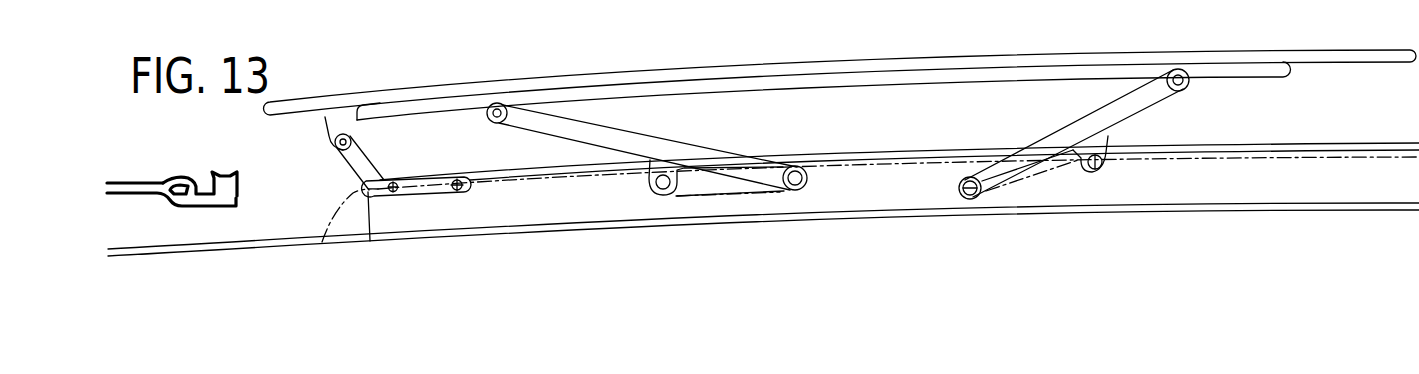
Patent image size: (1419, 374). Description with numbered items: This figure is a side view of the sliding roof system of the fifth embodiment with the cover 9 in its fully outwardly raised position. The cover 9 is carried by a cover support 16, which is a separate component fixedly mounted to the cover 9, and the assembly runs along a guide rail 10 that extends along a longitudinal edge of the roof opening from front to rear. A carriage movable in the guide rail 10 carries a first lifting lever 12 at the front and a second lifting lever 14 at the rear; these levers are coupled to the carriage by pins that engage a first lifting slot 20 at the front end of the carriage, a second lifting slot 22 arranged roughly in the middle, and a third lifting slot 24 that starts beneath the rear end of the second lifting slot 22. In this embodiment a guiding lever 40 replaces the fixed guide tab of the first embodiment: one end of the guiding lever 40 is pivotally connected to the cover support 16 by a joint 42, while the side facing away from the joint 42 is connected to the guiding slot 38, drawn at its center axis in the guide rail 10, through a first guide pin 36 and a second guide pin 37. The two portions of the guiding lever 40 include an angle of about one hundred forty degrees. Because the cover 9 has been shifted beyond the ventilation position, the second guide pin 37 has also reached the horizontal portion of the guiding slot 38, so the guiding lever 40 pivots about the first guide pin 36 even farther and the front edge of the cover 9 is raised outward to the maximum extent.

The cover 9 is at (755, 65).
The guide rail 10 is at (1262, 185).
The first lifting lever 12 is at (678, 147).
The second lifting lever 14 is at (1167, 100).
The cover support 16 is at (463, 102).
The first lifting slot 20 is at (730, 196).
The second lifting slot 22 is at (867, 178).
The third lifting slot 24 is at (1150, 168).
The first guide pin 36 is at (458, 190).
The second guide pin 37 is at (394, 192).
The guiding slot 38 is at (330, 248).
The guiding lever 40 is at (362, 161).
The joint 42 is at (333, 142).